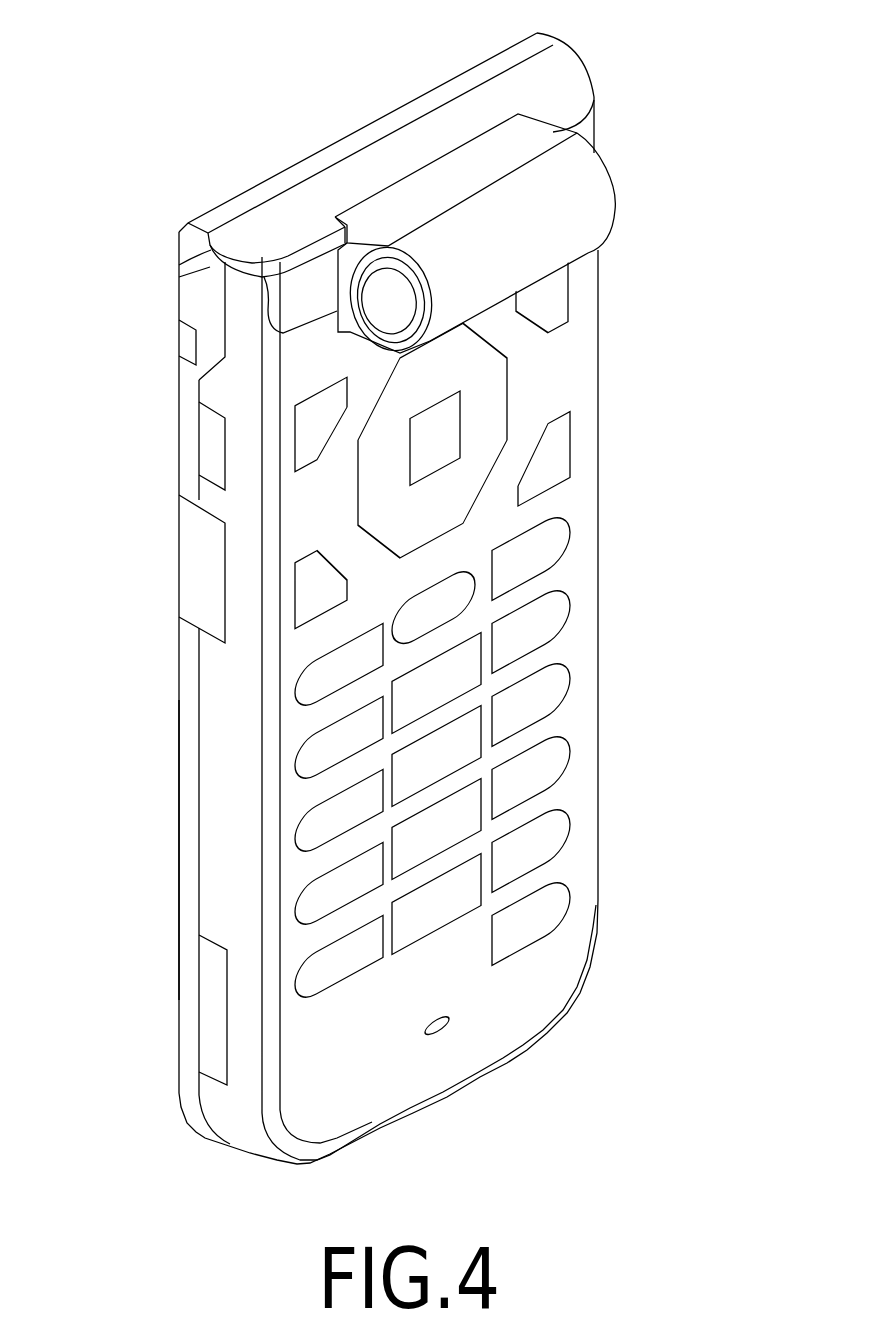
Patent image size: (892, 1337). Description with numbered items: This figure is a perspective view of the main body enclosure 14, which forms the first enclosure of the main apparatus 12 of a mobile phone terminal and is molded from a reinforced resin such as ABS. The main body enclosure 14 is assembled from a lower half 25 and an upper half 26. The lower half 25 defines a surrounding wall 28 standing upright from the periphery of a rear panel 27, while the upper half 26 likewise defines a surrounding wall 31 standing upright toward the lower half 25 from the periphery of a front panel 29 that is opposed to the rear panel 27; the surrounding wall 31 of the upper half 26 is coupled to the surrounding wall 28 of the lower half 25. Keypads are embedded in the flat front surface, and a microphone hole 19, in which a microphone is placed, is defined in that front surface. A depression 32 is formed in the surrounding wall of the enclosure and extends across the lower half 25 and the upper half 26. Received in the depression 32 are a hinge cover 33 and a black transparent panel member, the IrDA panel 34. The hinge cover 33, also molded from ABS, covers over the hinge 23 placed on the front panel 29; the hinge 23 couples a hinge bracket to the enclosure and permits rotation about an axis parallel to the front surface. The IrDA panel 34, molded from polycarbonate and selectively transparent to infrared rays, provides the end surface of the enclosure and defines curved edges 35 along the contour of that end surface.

The main apparatus 12 is at (637, 547).
The main body enclosure 14 is at (595, 397).
The microphone hole 19 is at (435, 1036).
The hinge 23 is at (615, 195).
The lower half 25 is at (182, 848).
The upper half 26 is at (215, 882).
The rear panel 27 is at (180, 510).
The surrounding wall 28 is at (190, 678).
The front panel 29 is at (582, 833).
The surrounding wall 31 is at (218, 723).
The depression 32 is at (213, 257).
The hinge cover 33 is at (441, 177).
The IrDA panel 34 is at (353, 170).
The curved edges 35 is at (262, 264).